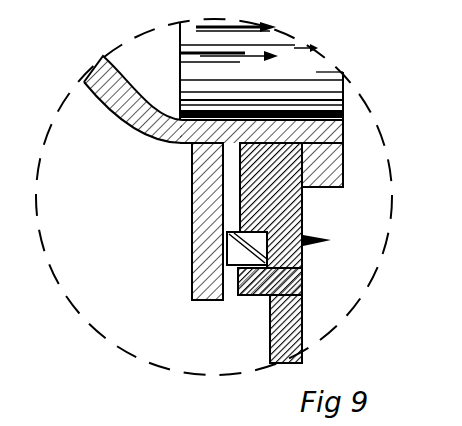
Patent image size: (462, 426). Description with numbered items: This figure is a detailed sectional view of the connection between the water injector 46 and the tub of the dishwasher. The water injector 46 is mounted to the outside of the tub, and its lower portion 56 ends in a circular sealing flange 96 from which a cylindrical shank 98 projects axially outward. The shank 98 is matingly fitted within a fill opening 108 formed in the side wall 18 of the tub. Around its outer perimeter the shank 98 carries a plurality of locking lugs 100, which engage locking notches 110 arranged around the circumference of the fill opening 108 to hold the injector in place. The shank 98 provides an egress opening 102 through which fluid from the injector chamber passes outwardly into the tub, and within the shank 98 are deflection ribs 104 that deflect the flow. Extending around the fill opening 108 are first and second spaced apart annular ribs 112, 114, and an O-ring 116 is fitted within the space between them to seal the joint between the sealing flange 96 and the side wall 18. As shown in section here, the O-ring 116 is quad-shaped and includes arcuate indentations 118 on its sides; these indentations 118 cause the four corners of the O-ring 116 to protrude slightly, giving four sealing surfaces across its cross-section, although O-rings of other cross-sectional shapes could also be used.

The side wall 18 is at (302, 268).
The water injector 46 is at (83, 86).
The lower portion 56 is at (100, 104).
The circular sealing flange 96 is at (192, 220).
The cylindrical shank 98 is at (343, 126).
The locking lugs 100 is at (321, 157).
The egress opening 102 is at (313, 82).
The deflection ribs 104 is at (306, 57).
The fill opening 108 is at (343, 110).
The locking notches 110 is at (223, 252).
The first annular rib 112 is at (236, 279).
The second annular rib 114 is at (236, 178).
The O-ring 116 is at (227, 238).
The arcuate indentations 118 is at (331, 240).